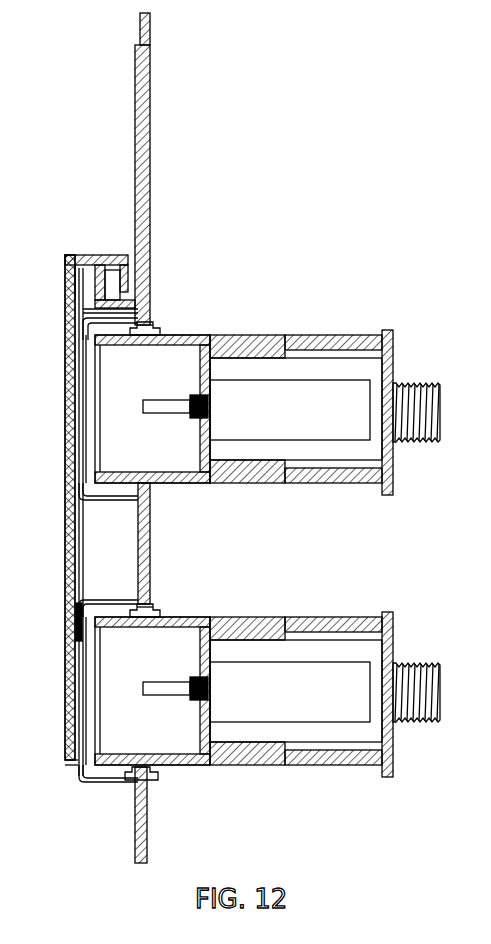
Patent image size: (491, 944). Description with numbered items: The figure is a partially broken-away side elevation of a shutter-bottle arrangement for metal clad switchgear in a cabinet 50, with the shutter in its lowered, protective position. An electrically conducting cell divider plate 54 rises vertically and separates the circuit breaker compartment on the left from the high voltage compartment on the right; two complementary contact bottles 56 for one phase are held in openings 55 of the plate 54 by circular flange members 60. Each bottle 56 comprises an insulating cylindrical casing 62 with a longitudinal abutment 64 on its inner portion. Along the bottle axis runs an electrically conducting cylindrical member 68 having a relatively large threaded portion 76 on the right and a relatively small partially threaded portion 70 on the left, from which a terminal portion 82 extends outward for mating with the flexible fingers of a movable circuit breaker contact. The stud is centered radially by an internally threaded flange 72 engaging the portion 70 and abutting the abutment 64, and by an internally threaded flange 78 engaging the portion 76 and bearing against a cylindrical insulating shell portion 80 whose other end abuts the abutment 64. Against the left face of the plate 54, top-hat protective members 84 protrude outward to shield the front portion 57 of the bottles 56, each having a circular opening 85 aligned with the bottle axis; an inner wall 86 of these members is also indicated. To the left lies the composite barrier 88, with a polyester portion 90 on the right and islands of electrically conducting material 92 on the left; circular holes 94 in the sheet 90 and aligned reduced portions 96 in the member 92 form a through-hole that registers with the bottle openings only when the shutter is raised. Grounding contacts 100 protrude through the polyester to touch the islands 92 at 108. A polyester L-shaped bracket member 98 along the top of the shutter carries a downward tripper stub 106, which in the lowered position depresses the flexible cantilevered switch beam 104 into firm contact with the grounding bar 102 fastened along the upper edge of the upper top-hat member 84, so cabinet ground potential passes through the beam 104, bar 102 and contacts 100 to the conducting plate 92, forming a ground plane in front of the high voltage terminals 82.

The cabinet 50 is at (240, 833).
The cell divider plate 54 is at (152, 530).
The openings 55 is at (160, 484).
The contact bottle apparatus 56 is at (180, 450).
The front portion 57 is at (92, 748).
The circular flange members 60 is at (160, 328).
The cylindrical casing 62 is at (288, 335).
The abutment 64 is at (246, 340).
The cylindrical member 68 is at (330, 445).
The partially threaded portion 70 is at (192, 399).
The internally threaded flange 72 is at (200, 377).
The threaded portion 76 is at (418, 384).
The internally threaded flange 78 is at (394, 342).
The cylindrical insulating shell portion 80 is at (306, 351).
The terminal portion 82 is at (143, 406).
The top-hat protective members 84 is at (98, 786).
The circular openings 85 is at (84, 636).
The inner wall 86 is at (78, 464).
The composite barrier 88 is at (62, 738).
The polyester portion 90 is at (74, 772).
The islands of electrically conducting material 92 is at (68, 764).
The circular holes 94 is at (82, 594).
The reduced portions 96 is at (68, 608).
The L-shaped bracket member 98 is at (101, 256).
The grounding contacts 100 is at (66, 285).
The grounding bar 102 is at (136, 311).
The flexible cantilevered switch beam 104 is at (138, 298).
The tripper stub 106 is at (110, 263).
The contact location 108 is at (66, 356).